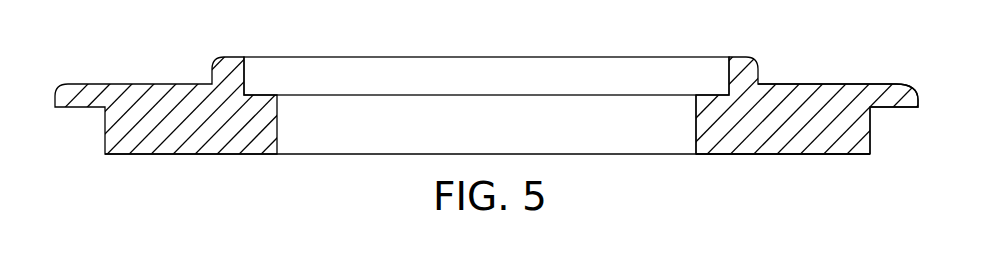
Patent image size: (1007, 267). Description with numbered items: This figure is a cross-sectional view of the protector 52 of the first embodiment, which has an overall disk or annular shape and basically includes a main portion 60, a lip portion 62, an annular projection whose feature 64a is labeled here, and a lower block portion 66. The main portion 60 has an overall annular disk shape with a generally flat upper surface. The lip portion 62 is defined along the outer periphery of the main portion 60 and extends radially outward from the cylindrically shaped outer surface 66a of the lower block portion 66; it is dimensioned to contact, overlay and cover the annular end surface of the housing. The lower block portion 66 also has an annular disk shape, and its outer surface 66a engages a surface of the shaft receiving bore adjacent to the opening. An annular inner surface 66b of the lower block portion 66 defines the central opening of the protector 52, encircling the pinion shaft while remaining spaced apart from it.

The protector 52 is at (492, 96).
The main portion 60 is at (794, 102).
The lip portion 62 is at (895, 93).
The cover panel 64a is at (657, 78).
The lower block portion 66 is at (838, 128).
The cylindrically shaped outer surface 66a is at (871, 125).
The inner surface 66b is at (695, 130).